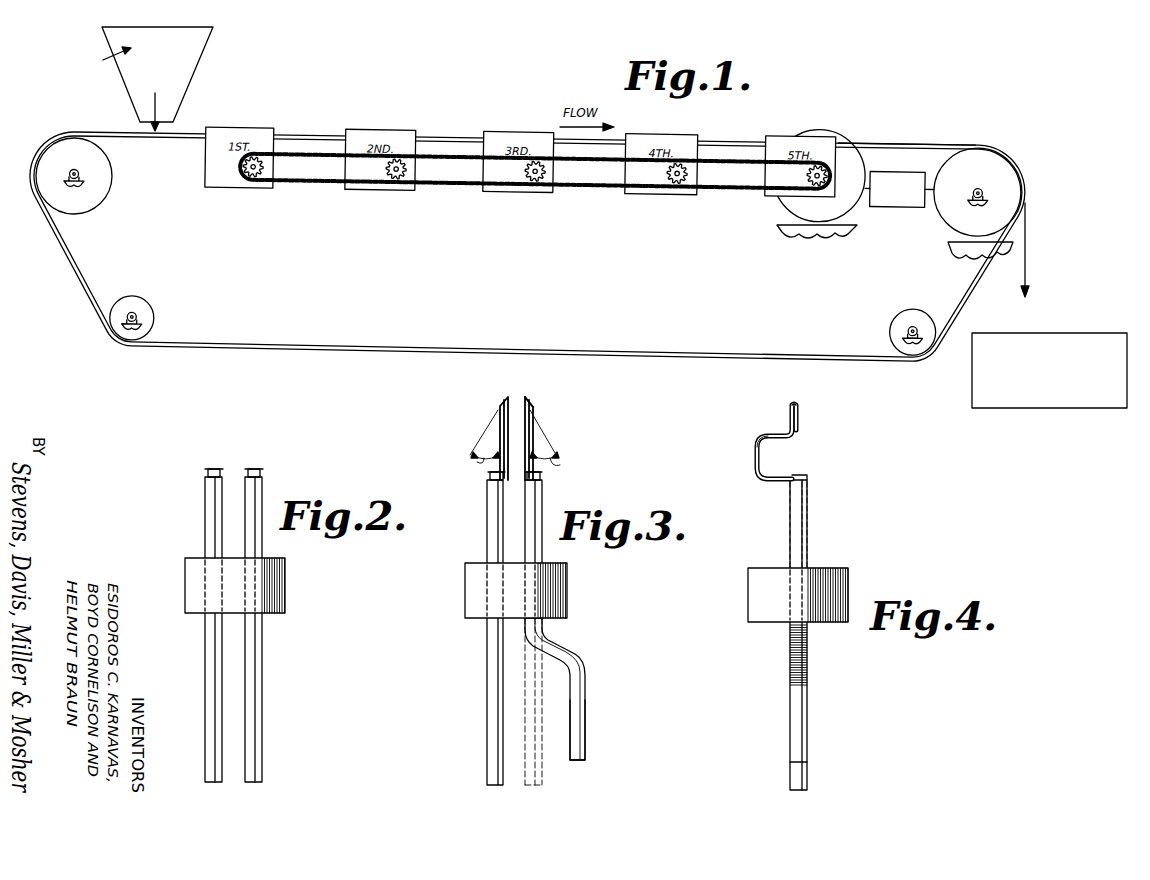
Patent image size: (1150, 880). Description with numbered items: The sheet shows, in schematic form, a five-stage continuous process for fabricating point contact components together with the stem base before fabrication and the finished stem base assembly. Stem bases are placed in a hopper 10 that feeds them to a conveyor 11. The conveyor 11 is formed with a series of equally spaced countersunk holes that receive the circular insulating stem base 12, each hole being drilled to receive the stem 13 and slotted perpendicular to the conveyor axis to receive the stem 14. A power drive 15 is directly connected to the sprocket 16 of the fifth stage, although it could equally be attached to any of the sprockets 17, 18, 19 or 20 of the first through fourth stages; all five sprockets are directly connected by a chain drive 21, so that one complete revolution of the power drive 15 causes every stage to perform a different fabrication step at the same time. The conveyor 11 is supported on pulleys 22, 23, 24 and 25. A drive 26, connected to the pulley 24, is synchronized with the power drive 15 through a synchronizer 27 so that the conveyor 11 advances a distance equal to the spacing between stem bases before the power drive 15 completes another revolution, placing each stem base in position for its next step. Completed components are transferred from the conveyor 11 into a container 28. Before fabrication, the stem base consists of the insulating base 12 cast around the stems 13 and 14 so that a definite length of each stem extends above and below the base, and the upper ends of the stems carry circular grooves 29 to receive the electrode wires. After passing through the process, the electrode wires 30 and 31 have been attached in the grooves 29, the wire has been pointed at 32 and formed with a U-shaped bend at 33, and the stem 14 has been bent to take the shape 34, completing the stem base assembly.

In FIG. 1, the hopper 10 is at (194, 62).
In FIG. 1, the conveyor 11 is at (899, 146).
In FIG. 2, the stem base 12 is at (193, 567).
In FIG. 3, the stem base 12 is at (465, 592).
In FIG. 4, the stem base 12 is at (748, 595).
In FIG. 2, the stem 13 is at (212, 665).
In FIG. 3, the stem 13 is at (492, 727).
In FIG. 4, the stem 13 is at (808, 779).
In FIG. 2, the stem 14 is at (258, 690).
In FIG. 3, the stem 14 is at (575, 656).
In FIG. 4, the stem 14 is at (808, 686).
In FIG. 1, the power drive 15 is at (783, 206).
In FIG. 1, the sprocket 16 is at (826, 165).
In FIG. 1, the sprocket 17 is at (251, 178).
In FIG. 1, the sprocket 18 is at (392, 178).
In FIG. 1, the sprocket 19 is at (533, 180).
In FIG. 1, the sprocket 20 is at (678, 184).
In FIG. 1, the chain drive 21 is at (318, 184).
In FIG. 1, the pulley 22 is at (154, 310).
In FIG. 1, the pulley 23 is at (892, 321).
In FIG. 1, the pulley 24 is at (1030, 178).
In FIG. 1, the pulley 25 is at (103, 190).
In FIG. 1, the drive 26 is at (987, 160).
In FIG. 1, the synchronizer 27 is at (895, 212).
In FIG. 1, the container 28 is at (1075, 350).
In FIG. 2, the circular grooves 29 is at (232, 467).
In FIG. 3, the circular grooves 29 is at (489, 477).
In FIG. 3, the electrode wire 30 is at (536, 430).
In FIG. 4, the electrode wire 30 is at (798, 413).
In FIG. 3, the electrode wire 31 is at (501, 430).
In FIG. 3, the point 32 is at (531, 399).
In FIG. 4, the point 32 is at (789, 405).
In FIG. 4, the U-shaped bend 33 is at (763, 465).
In FIG. 3, the shape 34 is at (586, 728).
In FIG. 4, the shape 34 is at (793, 714).